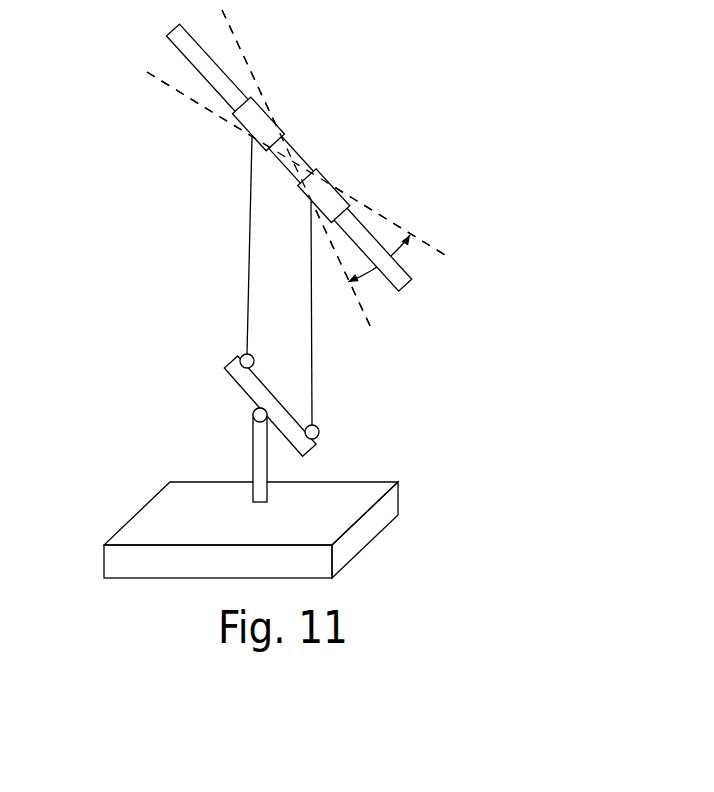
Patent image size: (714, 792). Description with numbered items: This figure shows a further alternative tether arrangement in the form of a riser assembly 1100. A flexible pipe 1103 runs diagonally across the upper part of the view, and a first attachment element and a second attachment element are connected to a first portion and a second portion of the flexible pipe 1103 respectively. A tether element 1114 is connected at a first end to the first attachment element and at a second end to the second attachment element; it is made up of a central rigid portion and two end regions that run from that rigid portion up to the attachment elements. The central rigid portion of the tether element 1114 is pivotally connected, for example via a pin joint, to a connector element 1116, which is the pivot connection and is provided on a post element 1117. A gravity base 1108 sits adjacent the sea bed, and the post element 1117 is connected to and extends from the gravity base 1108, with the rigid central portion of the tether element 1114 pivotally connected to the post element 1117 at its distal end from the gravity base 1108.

The riser assembly 1100 is at (469, 133).
The flexible pipe 1103 is at (222, 70).
The tether element 1114 is at (179, 133).
The connector element 1116 is at (148, 463).
The post element 1117 is at (268, 460).
The gravity base 1108 is at (397, 517).